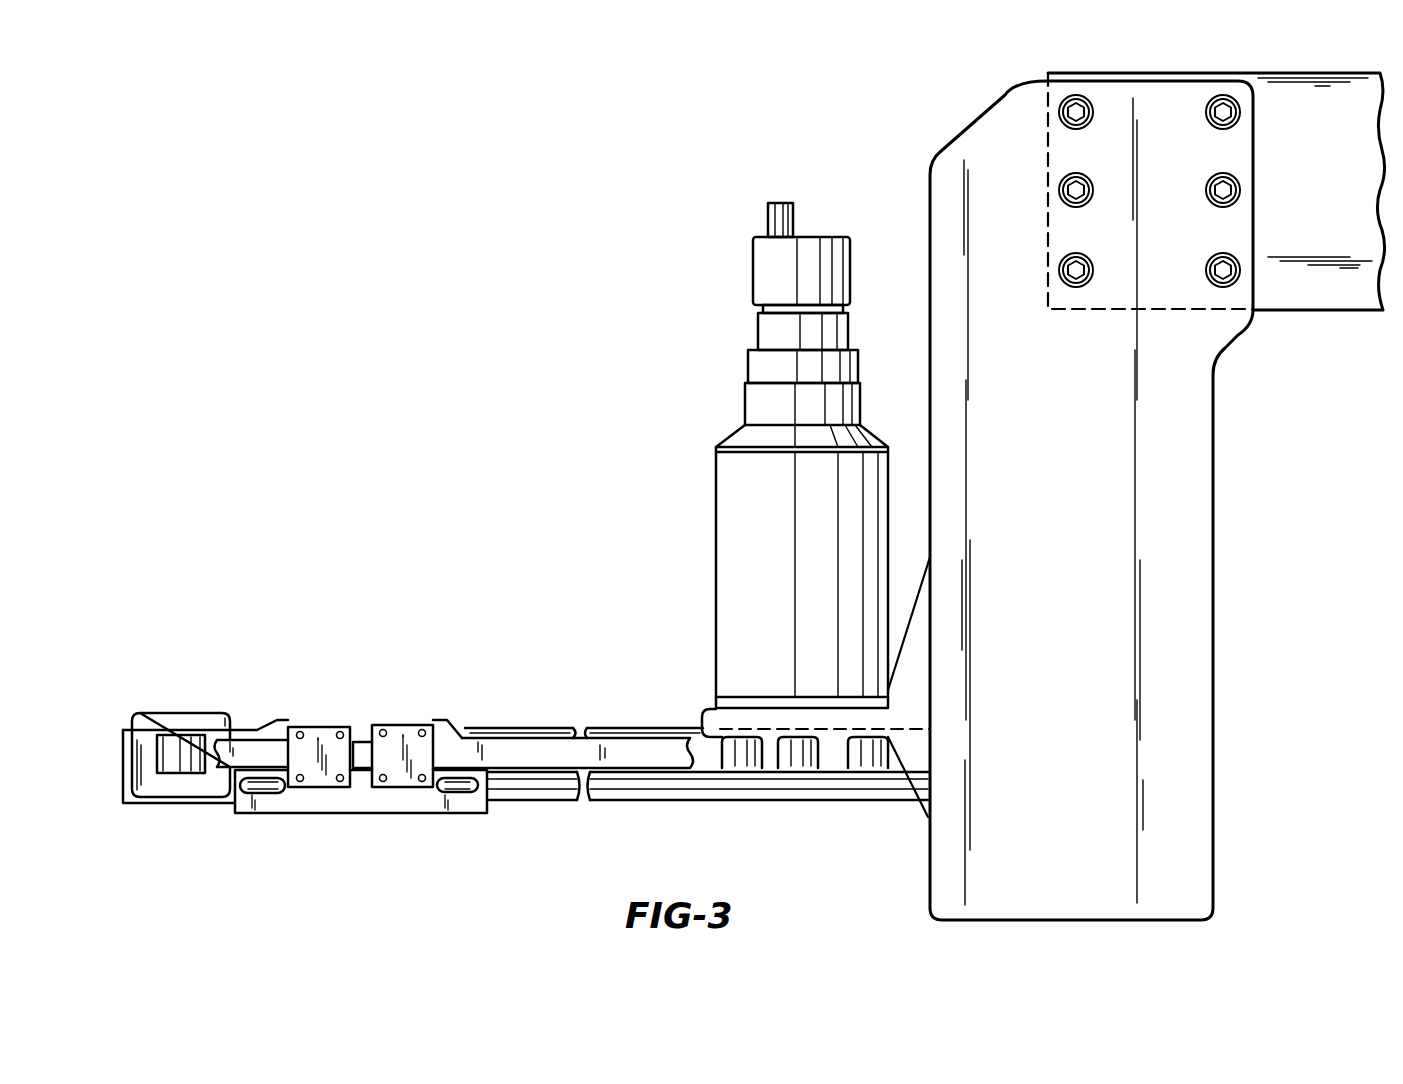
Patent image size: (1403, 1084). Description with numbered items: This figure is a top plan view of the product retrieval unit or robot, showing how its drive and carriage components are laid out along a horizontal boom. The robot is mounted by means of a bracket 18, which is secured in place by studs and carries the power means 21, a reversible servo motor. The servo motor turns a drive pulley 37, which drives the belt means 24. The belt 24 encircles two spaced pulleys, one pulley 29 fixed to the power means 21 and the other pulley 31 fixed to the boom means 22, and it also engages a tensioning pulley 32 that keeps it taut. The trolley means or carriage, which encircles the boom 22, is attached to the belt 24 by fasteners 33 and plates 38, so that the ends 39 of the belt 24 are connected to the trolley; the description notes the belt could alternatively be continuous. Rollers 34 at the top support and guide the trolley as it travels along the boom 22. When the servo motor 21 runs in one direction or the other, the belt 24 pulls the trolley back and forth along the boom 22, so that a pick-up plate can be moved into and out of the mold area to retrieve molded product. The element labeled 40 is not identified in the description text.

The bracket 18 is at (705, 716).
The power means 21 is at (716, 575).
The boom means 22 is at (545, 727).
The belt means 24 is at (600, 752).
The pulley 29 is at (857, 762).
The pulley 31 is at (172, 750).
The tensioning pulley 32 is at (740, 762).
The fasteners 33 is at (302, 733).
The rollers 34 is at (268, 785).
The drive pulley 37 is at (798, 762).
The plates 38 is at (327, 733).
The ends 39 is at (360, 745).
The end stop 40 is at (148, 712).